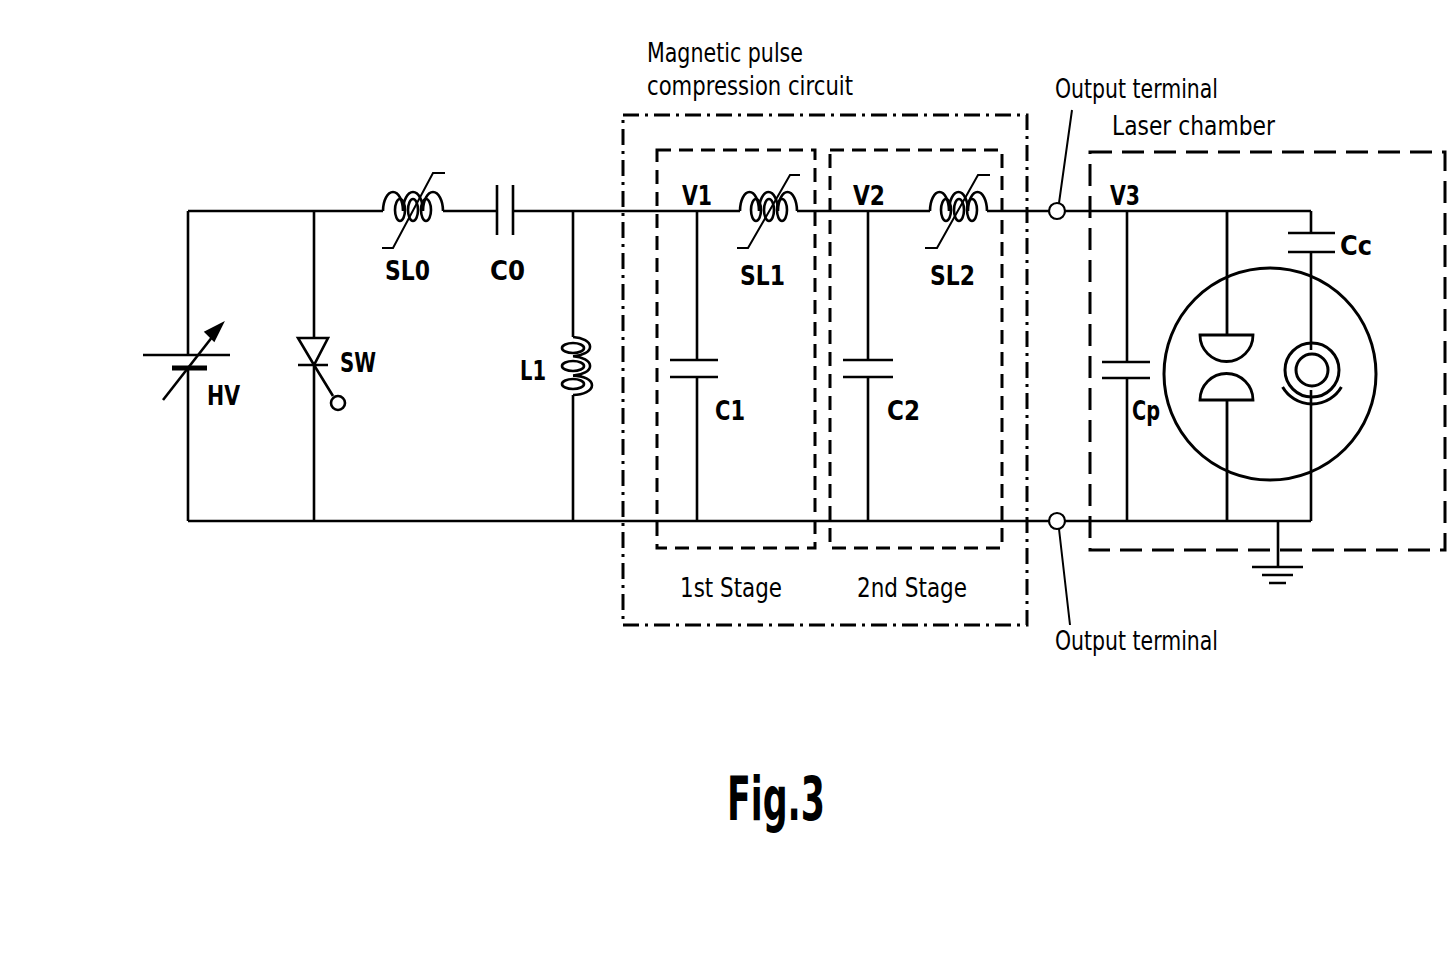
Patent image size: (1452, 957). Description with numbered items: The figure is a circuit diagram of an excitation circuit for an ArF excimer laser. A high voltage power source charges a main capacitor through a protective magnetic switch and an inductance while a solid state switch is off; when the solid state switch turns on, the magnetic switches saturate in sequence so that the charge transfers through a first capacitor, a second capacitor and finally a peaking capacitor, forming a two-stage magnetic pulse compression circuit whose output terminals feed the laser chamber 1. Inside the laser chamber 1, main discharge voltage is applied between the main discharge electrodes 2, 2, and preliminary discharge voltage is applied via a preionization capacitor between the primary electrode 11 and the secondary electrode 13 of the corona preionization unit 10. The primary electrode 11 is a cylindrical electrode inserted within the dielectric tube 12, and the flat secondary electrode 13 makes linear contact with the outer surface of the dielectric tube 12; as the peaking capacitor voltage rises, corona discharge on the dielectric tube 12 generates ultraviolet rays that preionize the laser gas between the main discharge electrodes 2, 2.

The laser chamber 1 is at (1345, 300).
The main discharge electrodes 2 is at (1252, 385).
The corona preionization unit 10 is at (1352, 367).
The primary electrode 11 is at (1337, 336).
The dielectric tube 12 is at (1297, 352).
The secondary electrode 13 is at (1338, 397).